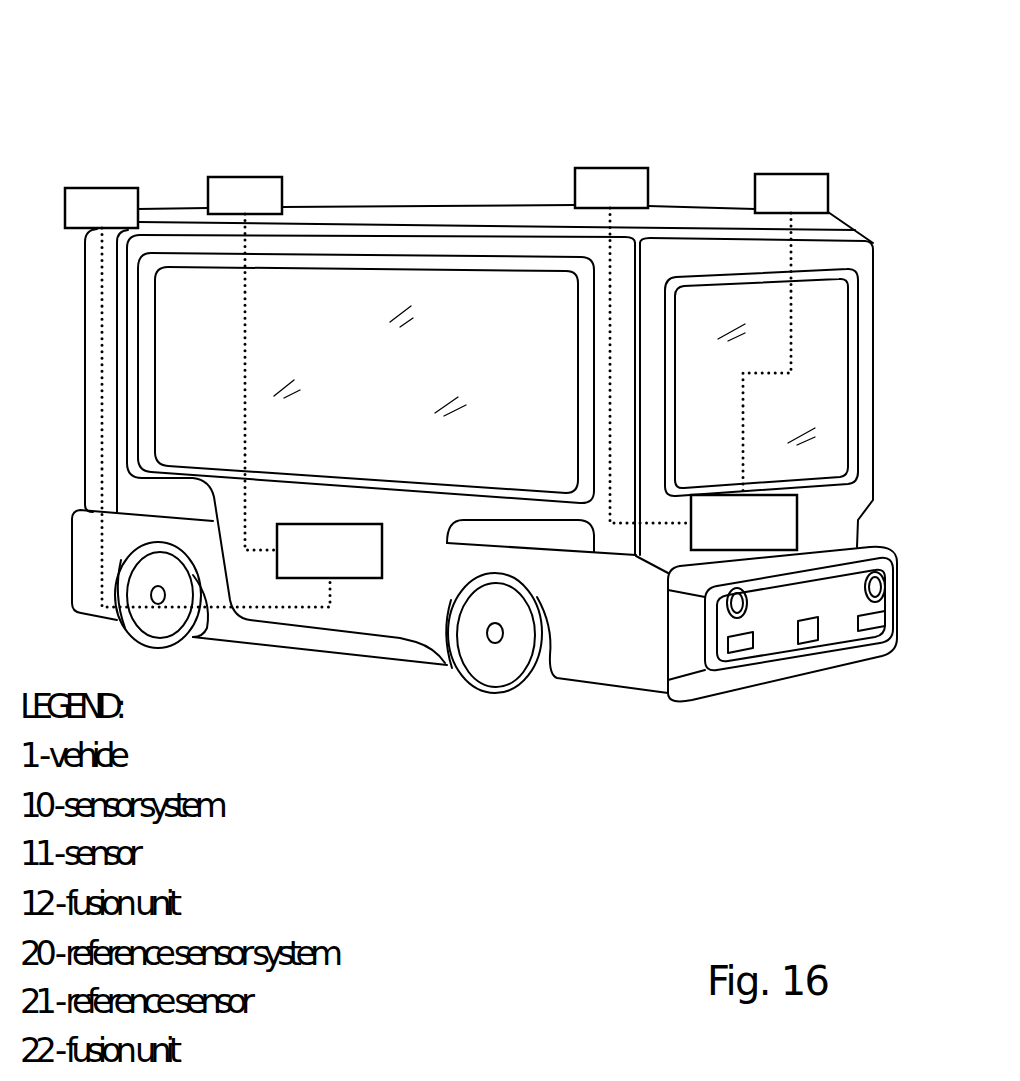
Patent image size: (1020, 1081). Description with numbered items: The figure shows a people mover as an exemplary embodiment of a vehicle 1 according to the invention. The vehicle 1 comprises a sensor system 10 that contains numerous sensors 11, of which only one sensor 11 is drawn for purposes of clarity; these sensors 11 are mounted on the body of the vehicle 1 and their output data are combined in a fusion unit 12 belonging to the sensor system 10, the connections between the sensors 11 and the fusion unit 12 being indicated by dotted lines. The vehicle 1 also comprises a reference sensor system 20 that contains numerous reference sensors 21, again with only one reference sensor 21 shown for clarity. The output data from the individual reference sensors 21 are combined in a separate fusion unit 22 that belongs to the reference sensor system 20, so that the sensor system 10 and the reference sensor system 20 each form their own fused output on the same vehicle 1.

The vehicle 1 is at (867, 340).
The sensor system 10 is at (55, 128).
The sensor 11 is at (121, 188).
The fusion unit 12 is at (357, 578).
The reference sensor system 20 is at (833, 132).
The reference sensor 21 is at (602, 168).
The fusion unit 22 is at (797, 523).